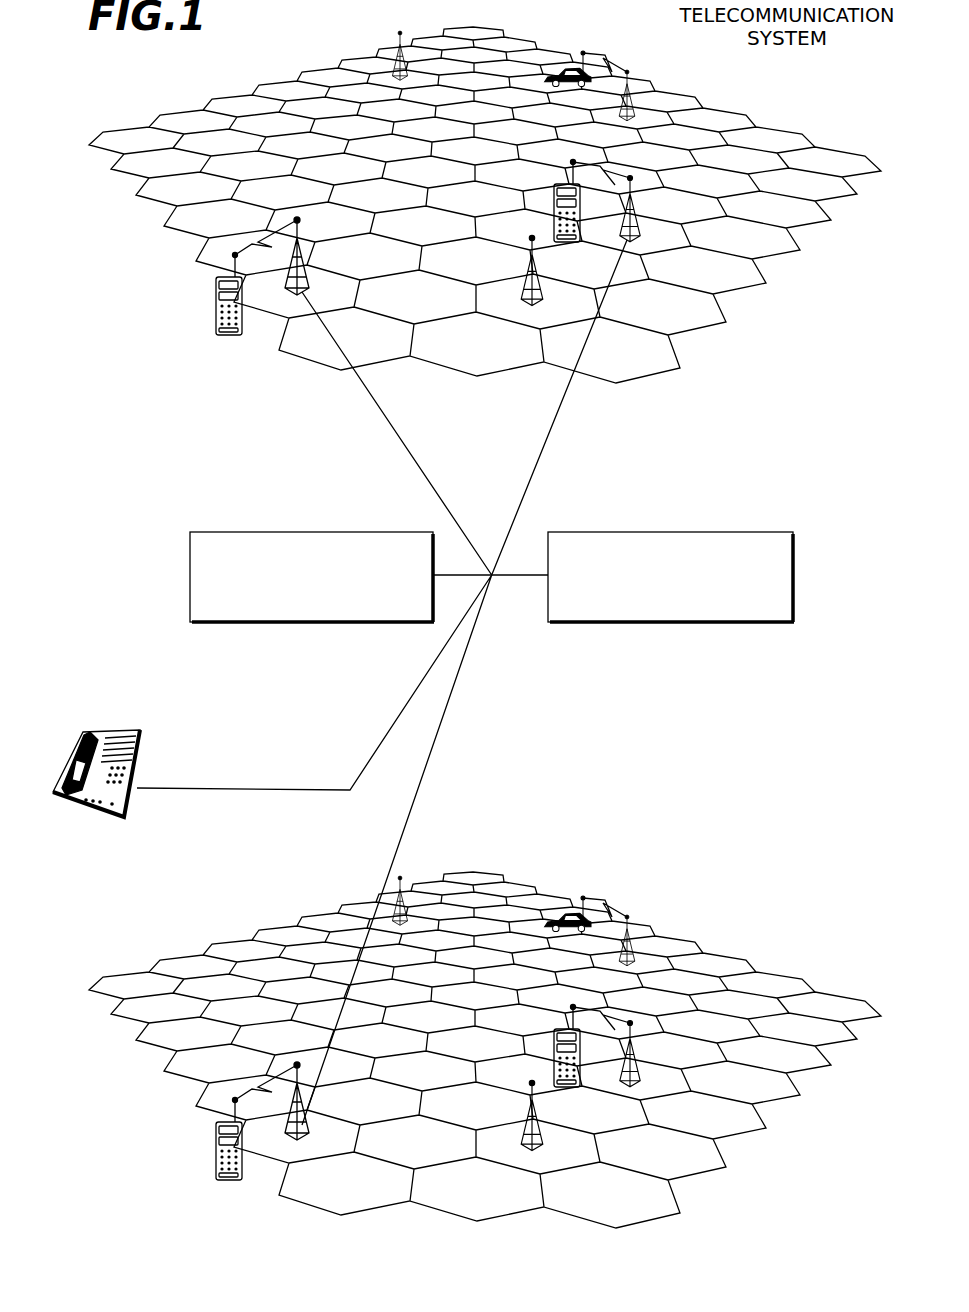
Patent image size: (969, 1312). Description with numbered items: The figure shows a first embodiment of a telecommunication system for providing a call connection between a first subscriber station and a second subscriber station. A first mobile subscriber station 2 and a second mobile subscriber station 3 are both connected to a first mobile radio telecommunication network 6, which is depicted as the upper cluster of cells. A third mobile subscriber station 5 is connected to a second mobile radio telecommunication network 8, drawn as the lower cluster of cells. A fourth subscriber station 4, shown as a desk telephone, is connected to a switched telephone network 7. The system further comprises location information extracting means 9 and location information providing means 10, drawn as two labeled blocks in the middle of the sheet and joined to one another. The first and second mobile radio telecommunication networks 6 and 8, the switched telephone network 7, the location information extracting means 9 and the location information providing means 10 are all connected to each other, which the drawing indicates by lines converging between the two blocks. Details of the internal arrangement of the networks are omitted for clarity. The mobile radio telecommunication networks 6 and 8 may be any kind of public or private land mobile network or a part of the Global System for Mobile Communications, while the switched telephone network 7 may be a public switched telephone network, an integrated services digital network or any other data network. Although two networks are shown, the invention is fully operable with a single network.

The first mobile subscriber station 2 is at (212, 300).
The second mobile subscriber station 3 is at (597, 182).
The fourth subscriber station 4 is at (113, 749).
The third mobile subscriber station 5 is at (212, 1140).
The first mobile radio telecommunication network 6 is at (737, 301).
The switched telephone network 7 is at (82, 733).
The second mobile radio telecommunication network 8 is at (762, 960).
The location information extracting means 9 is at (216, 531).
The location information providing means 10 is at (752, 531).